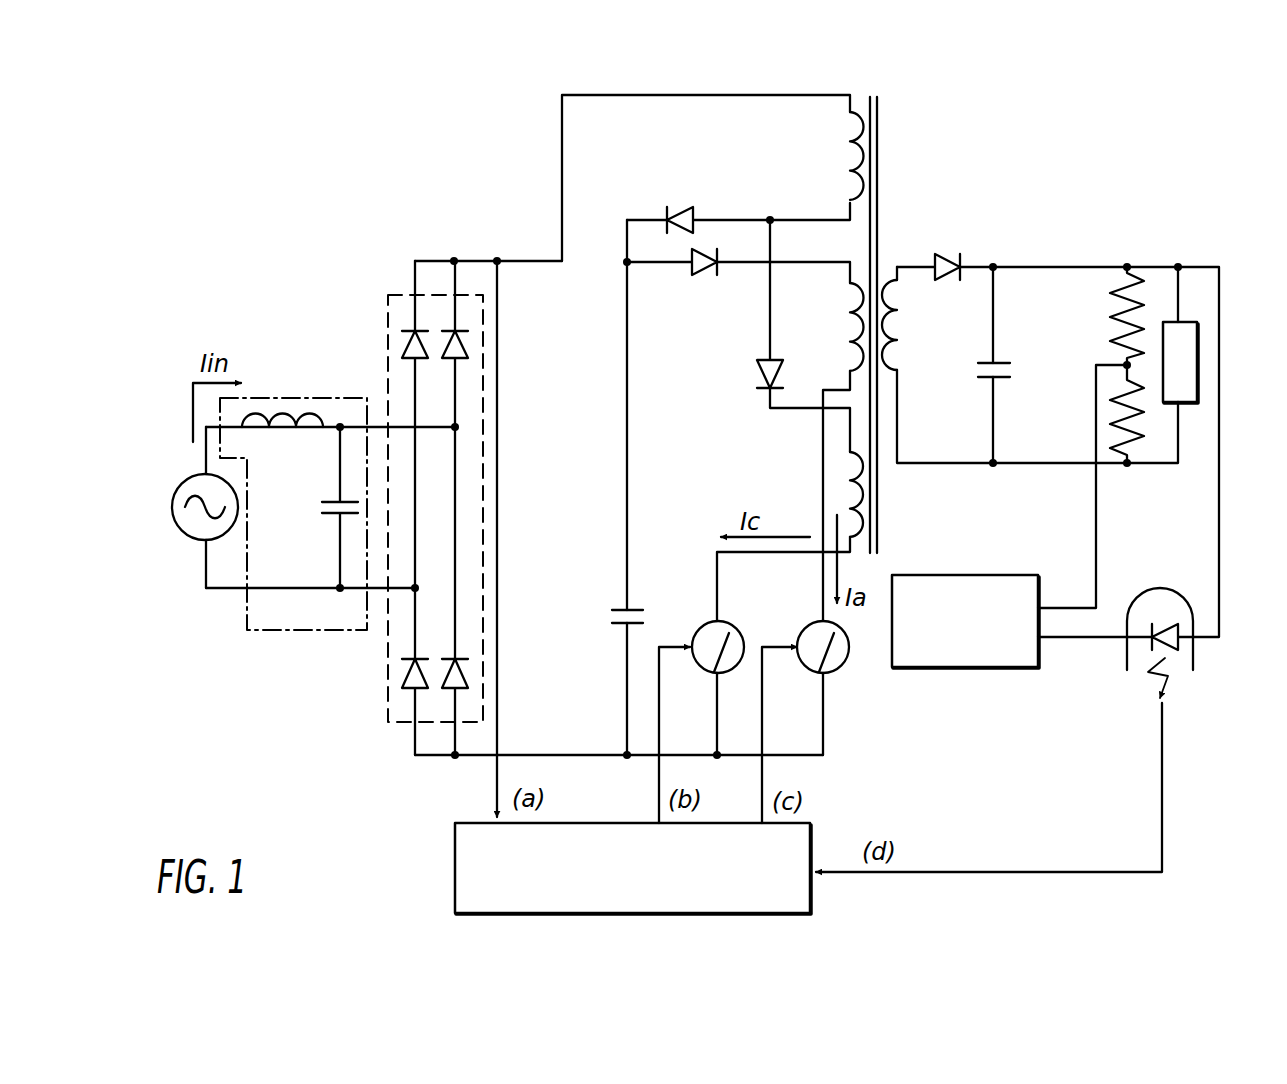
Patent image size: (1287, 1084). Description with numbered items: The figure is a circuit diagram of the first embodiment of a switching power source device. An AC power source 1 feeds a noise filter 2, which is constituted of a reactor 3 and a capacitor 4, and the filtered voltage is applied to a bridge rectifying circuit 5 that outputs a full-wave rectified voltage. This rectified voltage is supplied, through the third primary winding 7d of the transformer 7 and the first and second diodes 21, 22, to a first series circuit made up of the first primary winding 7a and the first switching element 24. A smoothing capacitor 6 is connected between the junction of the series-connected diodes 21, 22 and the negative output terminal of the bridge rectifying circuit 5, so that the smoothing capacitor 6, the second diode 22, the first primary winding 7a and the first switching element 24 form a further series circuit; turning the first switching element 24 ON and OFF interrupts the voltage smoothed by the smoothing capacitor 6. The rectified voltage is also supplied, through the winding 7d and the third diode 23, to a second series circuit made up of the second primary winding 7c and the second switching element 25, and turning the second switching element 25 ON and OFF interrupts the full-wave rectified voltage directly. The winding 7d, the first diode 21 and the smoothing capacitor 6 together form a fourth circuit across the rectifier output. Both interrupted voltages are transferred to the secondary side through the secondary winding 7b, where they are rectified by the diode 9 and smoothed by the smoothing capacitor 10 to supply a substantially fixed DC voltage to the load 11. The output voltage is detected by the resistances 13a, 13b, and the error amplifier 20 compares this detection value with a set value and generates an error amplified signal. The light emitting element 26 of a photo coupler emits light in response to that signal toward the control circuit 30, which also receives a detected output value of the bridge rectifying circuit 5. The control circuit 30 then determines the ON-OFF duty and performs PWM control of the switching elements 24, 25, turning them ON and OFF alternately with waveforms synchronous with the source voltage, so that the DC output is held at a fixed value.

The AC power source 1 is at (182, 535).
The noise filter 2 is at (317, 632).
The reactor 3 is at (286, 427).
The capacitor 4 is at (322, 512).
The bridge rectifying circuit 5 is at (388, 308).
The smoothing capacitor 6 is at (610, 610).
The transformer 7 is at (878, 152).
The first primary winding 7a is at (850, 298).
The secondary winding 7b is at (890, 357).
The second primary winding 7c is at (880, 537).
The third primary winding 7d is at (857, 160).
The diode 9 is at (947, 250).
The smoothing capacitor 10 is at (980, 367).
The load 11 is at (1197, 337).
The resistance for voltage detection 13a is at (1112, 300).
The resistance for voltage detection 13b is at (1147, 443).
The error amplifier 20 is at (943, 667).
The first diode 21 is at (685, 208).
The second diode 22 is at (696, 273).
The third diode 23 is at (755, 373).
The first switching element 24 is at (805, 627).
The second switching element 25 is at (700, 627).
The light emitting element 26 is at (1178, 667).
The control circuit 30 is at (453, 865).